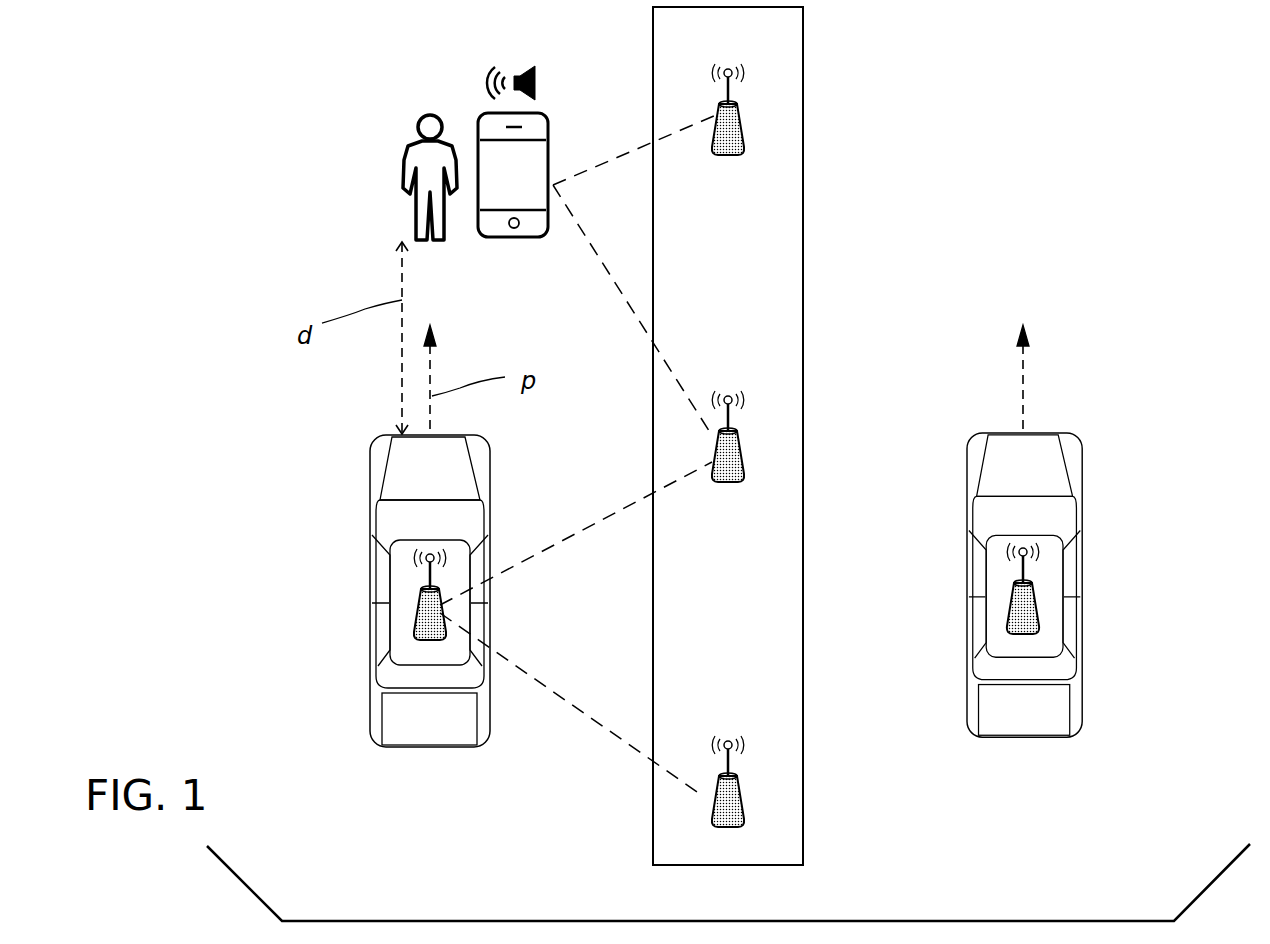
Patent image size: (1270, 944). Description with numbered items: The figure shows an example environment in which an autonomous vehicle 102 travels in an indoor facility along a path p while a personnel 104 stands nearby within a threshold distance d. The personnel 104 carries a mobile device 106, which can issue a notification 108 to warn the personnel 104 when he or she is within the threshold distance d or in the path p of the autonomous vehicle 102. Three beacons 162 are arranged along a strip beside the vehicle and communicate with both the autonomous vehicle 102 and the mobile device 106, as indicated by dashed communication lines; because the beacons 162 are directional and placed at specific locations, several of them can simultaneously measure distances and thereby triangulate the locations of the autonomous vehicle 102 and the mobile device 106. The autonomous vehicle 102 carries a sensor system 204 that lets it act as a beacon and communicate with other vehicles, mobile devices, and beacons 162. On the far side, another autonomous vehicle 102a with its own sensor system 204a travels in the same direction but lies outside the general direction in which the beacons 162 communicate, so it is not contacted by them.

The autonomous vehicle 102 is at (373, 565).
The another autonomous vehicle 102a is at (1085, 468).
The personnel 104 is at (403, 175).
The mobile device 106 is at (522, 238).
The notification 108 is at (488, 70).
The beacons 162 is at (737, 133).
The sensor system 204 is at (416, 617).
The sensor system 204a is at (1030, 603).